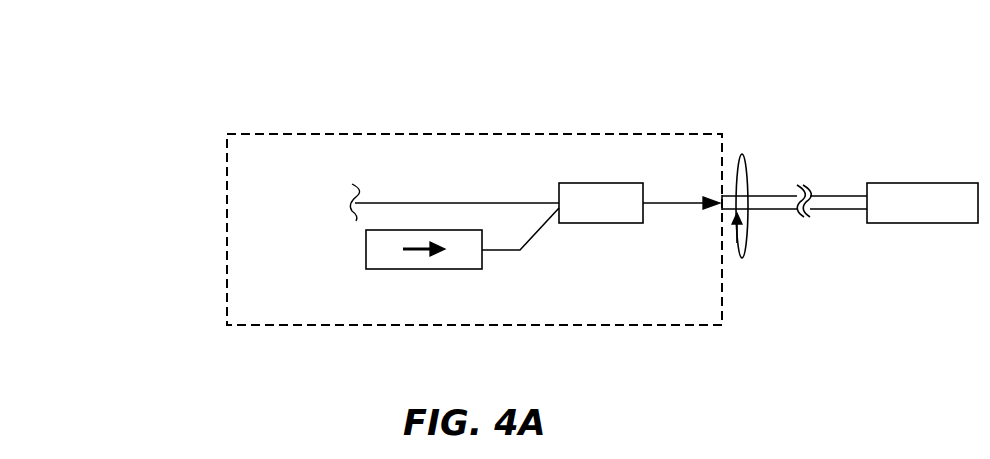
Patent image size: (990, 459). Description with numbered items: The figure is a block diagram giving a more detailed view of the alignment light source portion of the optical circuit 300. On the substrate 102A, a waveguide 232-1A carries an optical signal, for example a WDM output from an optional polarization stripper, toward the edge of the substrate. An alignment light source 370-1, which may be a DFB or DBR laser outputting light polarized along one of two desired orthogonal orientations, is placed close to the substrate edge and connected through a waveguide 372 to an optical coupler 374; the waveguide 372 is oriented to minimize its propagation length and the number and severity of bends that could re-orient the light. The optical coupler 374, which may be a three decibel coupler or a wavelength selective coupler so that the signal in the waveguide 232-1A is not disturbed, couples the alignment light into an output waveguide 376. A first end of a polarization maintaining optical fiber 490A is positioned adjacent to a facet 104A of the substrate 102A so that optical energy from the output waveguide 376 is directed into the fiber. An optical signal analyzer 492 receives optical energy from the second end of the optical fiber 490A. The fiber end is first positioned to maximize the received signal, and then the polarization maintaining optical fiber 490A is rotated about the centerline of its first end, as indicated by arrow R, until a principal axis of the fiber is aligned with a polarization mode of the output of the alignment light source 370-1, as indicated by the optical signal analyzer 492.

The optical circuit 300 is at (130, 69).
The substrate 102A is at (254, 130).
The waveguide 232-1A is at (477, 203).
The optical coupler 374 is at (606, 183).
The output waveguide 376 is at (672, 201).
The alignment light source 370-1 is at (455, 270).
The waveguide 372 is at (507, 250).
The facet 104A is at (738, 145).
The arrow R is at (742, 257).
The polarization maintaining optical fiber 490A is at (776, 194).
The optical signal analyzer 492 is at (880, 183).